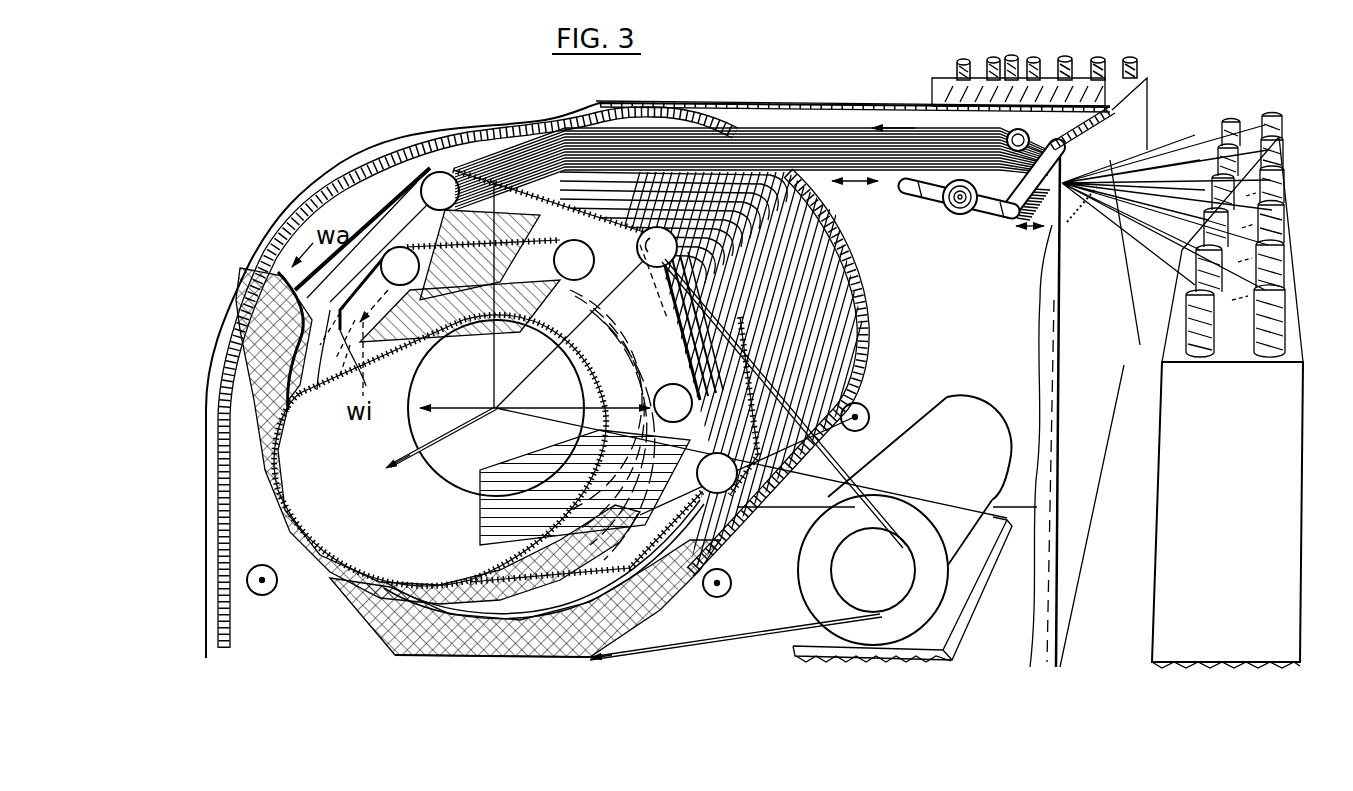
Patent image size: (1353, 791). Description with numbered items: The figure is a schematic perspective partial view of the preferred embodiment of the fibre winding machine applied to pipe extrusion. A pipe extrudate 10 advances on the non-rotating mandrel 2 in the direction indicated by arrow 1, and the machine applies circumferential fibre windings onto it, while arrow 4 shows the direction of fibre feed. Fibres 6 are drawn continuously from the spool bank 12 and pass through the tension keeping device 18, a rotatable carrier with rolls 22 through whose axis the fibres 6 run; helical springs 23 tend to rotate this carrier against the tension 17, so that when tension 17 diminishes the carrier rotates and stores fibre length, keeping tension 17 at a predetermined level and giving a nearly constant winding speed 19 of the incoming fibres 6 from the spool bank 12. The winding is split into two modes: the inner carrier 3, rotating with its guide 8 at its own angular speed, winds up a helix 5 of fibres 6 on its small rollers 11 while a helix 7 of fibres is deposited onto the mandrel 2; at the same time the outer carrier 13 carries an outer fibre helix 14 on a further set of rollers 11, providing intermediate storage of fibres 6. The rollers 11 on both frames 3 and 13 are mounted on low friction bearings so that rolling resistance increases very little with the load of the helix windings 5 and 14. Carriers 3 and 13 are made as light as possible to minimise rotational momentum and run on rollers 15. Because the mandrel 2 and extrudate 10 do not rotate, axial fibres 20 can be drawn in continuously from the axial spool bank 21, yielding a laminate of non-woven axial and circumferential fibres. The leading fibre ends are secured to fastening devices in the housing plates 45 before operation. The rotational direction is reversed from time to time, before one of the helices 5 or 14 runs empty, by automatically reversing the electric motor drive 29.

The arrow 1 is at (429, 452).
The mandrel 2 is at (466, 496).
The inner carrier 3 is at (454, 578).
The arrow 4 is at (860, 90).
The helix 5 is at (741, 523).
The fibres 6 is at (838, 146).
The helix 7 is at (582, 372).
The guide 8 is at (400, 266).
The pipe extrudate 10 is at (349, 341).
The rollers 11 is at (516, 375).
The spool bank 12 is at (1298, 240).
The outer carrier 13 is at (352, 622).
The outer fibre helix 14 is at (814, 330).
The rollers 15 is at (260, 596).
The tension 17 is at (942, 193).
The tension keeping device 18 is at (992, 214).
The speed of incoming fibres 19 is at (918, 142).
The axial fibres 20 is at (1108, 100).
The axial spool bank 21 is at (1140, 77).
The rolls 22 is at (1030, 182).
The helical springs 23 is at (957, 234).
The electric motor drive 29 is at (887, 528).
The housing plates 45 is at (216, 594).